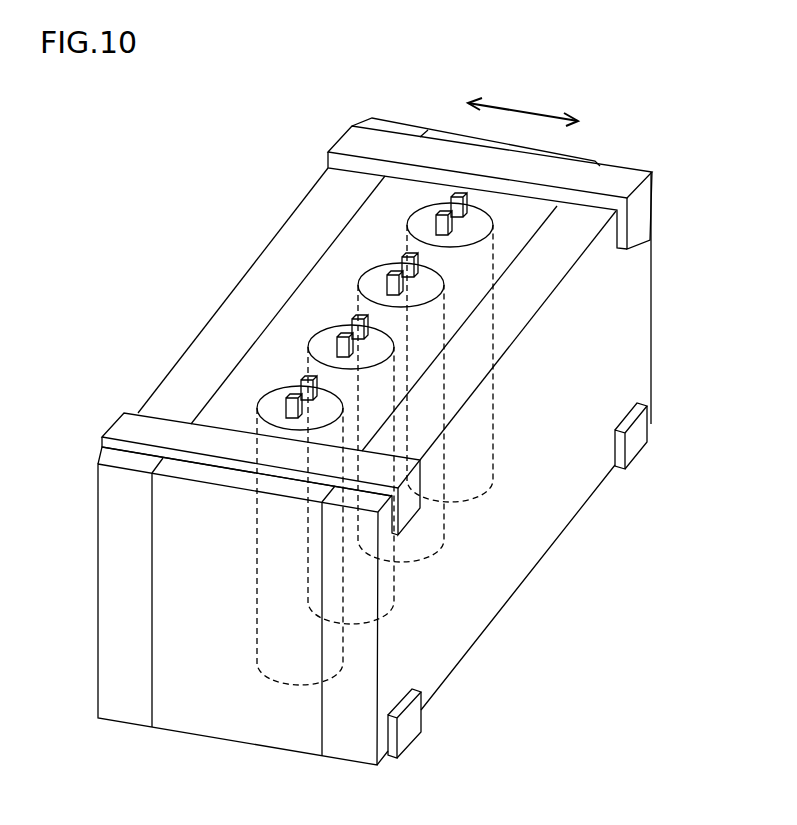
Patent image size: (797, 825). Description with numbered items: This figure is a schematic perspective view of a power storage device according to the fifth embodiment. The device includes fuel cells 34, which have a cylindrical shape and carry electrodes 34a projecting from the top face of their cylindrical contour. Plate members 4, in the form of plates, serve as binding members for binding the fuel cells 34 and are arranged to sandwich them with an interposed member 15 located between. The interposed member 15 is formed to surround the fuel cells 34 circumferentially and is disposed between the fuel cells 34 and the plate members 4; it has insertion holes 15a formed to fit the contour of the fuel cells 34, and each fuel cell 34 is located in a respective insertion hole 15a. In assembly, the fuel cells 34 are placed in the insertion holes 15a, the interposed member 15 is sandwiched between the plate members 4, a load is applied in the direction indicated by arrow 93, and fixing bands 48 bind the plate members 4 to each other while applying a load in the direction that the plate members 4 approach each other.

The plate member 4 is at (268, 245).
The interposed member 15 is at (227, 407).
The insertion hole 15a is at (442, 285).
The fuel cell 34 is at (425, 213).
The electrode 34a is at (350, 328).
The fixing band 48 is at (353, 143).
The arrow 93 is at (528, 103).